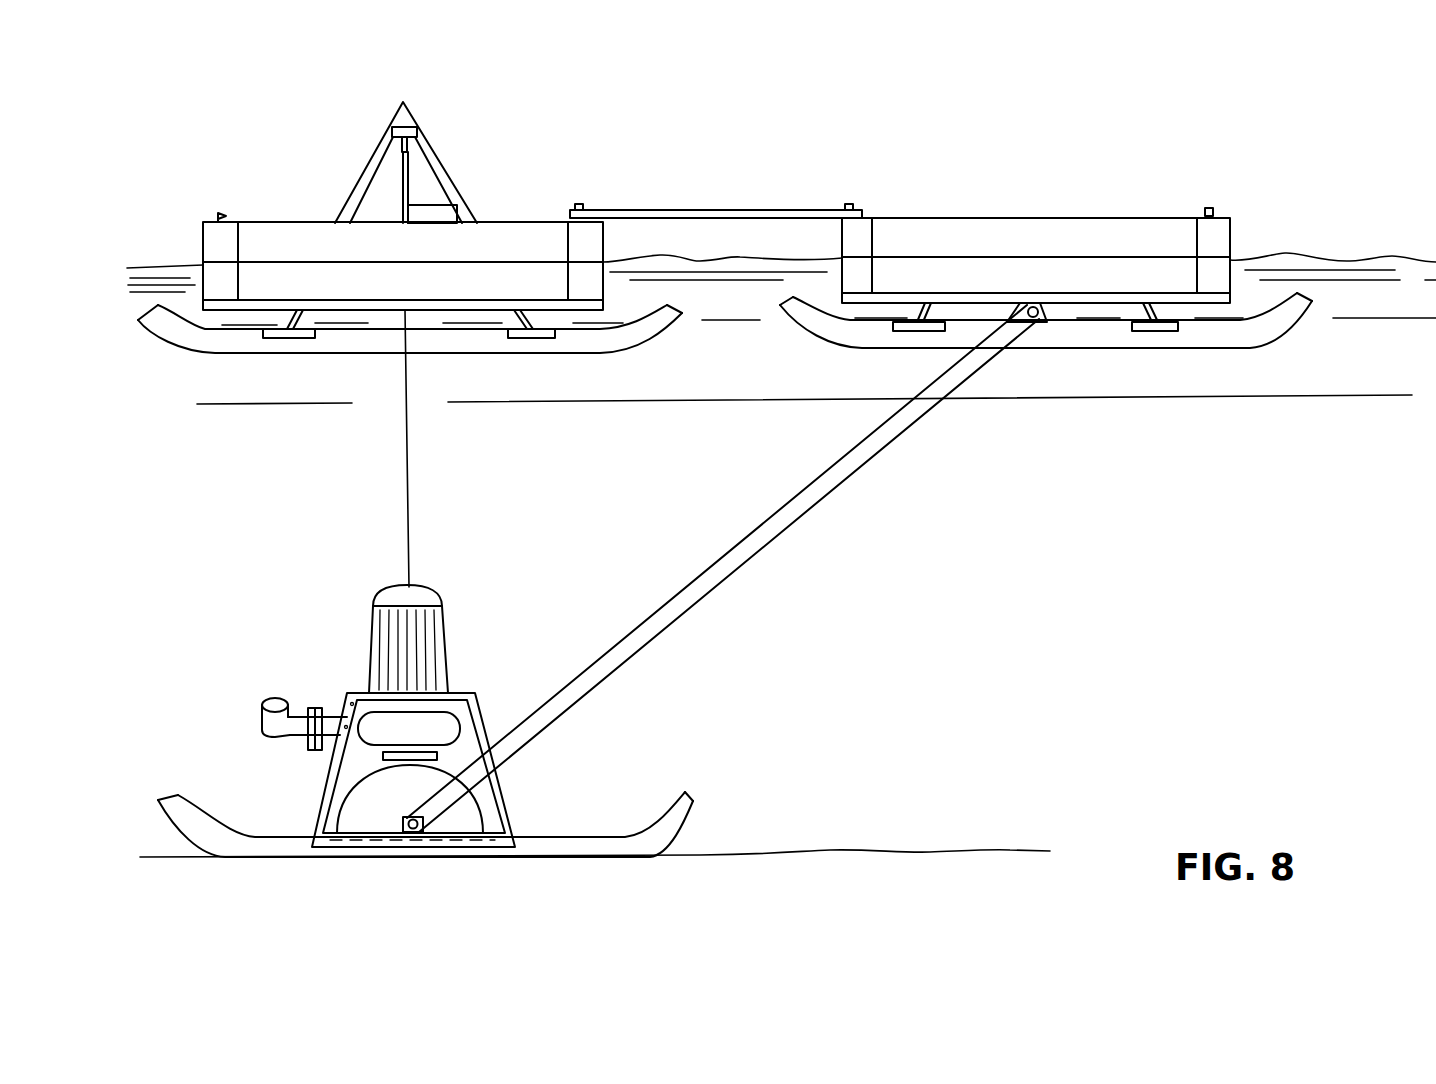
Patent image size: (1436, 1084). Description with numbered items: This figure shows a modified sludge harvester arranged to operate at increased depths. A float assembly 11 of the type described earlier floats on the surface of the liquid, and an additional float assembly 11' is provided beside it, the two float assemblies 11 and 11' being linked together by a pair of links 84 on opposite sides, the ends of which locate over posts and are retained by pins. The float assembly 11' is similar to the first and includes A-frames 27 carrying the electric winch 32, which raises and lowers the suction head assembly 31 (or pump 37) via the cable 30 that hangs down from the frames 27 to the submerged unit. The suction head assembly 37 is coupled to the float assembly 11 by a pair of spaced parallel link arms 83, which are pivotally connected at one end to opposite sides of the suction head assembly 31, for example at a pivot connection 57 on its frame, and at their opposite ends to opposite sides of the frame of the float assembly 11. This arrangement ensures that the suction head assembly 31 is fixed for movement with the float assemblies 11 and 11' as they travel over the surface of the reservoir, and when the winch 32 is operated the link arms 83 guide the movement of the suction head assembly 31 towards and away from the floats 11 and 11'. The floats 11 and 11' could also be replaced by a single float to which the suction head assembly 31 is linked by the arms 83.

The float assembly 11 is at (1046, 235).
The additional float assembly 11' is at (410, 228).
The A-frame 27 is at (378, 147).
The cable 30 is at (410, 527).
The suction head assembly 31 is at (315, 575).
The electric winch 32 is at (445, 215).
The suction head assembly 37 is at (440, 650).
The pivot connection 57 is at (418, 832).
The link arm 83 is at (820, 495).
The link 84 is at (698, 210).